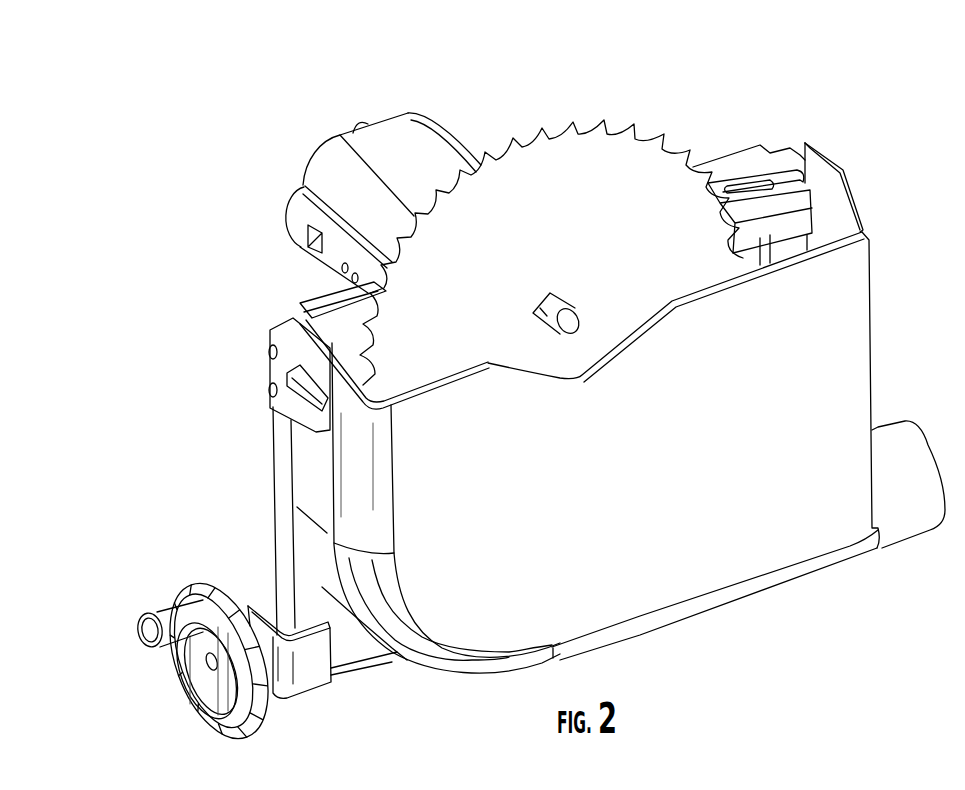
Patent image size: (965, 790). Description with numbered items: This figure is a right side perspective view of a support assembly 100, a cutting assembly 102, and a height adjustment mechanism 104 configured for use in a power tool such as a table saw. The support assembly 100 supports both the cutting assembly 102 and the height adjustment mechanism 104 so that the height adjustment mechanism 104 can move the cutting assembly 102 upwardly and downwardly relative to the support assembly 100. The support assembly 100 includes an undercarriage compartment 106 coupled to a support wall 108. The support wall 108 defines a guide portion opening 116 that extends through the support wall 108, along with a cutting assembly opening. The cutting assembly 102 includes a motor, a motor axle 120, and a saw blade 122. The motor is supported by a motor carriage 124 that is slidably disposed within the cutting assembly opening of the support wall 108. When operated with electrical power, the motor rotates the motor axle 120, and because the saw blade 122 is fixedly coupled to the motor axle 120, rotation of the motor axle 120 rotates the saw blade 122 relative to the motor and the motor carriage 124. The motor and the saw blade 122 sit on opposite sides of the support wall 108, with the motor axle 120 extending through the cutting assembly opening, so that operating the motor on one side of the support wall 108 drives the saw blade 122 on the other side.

The support assembly 100 is at (905, 174).
The cutting assembly 102 is at (636, 67).
The height adjustment mechanism 104 is at (106, 621).
The undercarriage compartment 106 is at (848, 368).
The support wall 108 is at (280, 483).
The guide portion opening 116 is at (768, 258).
The motor axle 120 is at (540, 313).
The saw blade 122 is at (654, 172).
The motor carriage 124 is at (430, 160).